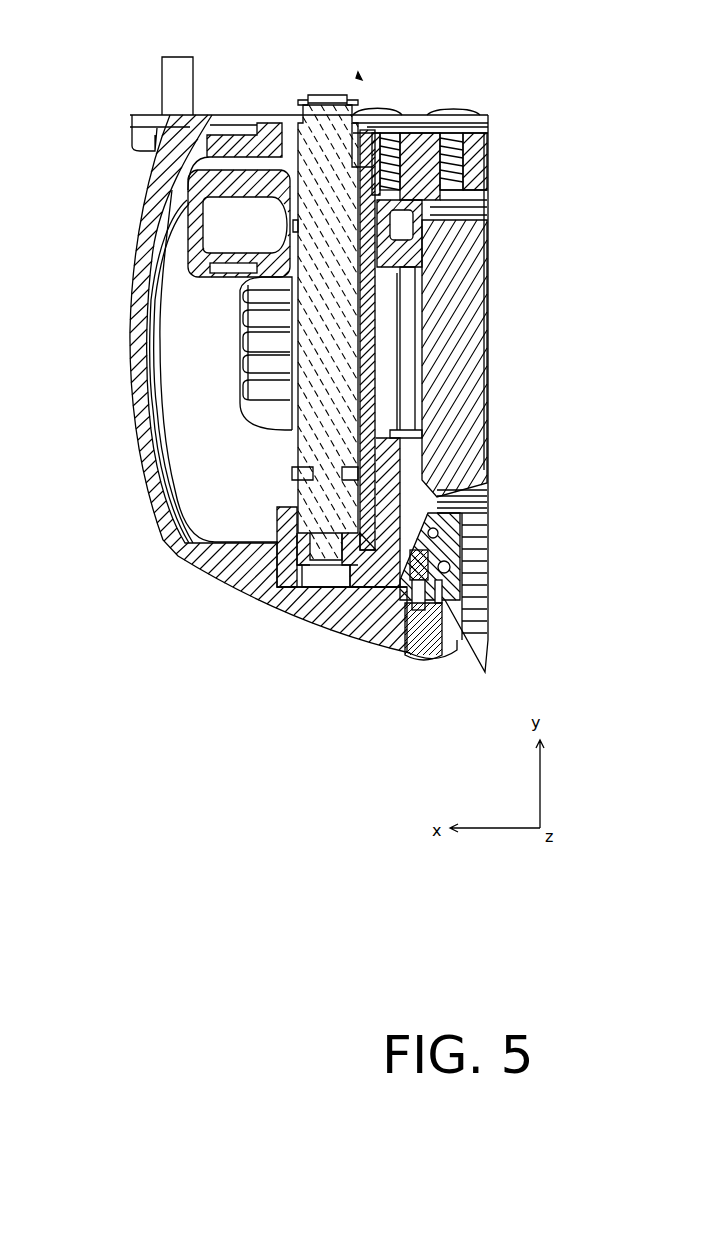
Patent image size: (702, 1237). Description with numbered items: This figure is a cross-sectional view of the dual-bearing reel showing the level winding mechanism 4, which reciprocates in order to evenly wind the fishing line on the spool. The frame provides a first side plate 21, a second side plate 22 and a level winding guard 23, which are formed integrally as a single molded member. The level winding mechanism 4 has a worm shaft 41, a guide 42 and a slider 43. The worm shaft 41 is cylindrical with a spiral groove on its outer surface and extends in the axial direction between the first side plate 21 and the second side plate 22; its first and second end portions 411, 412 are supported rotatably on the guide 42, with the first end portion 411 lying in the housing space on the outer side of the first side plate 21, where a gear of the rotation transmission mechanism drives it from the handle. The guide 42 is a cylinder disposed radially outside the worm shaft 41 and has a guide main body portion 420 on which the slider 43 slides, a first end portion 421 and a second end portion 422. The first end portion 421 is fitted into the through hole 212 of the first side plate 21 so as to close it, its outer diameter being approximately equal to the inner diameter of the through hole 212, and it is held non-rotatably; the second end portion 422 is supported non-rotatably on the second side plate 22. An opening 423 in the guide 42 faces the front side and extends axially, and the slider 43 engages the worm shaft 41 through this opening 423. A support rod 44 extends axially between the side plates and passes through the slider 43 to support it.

The level winding mechanism 4 is at (360, 74).
The first side plate 21 is at (425, 114).
The second side plate 22 is at (325, 620).
The level winding guard 23 is at (131, 362).
The worm shaft 41 is at (318, 284).
The guide 42 is at (280, 570).
The slider 43 is at (150, 200).
The support rod 44 is at (393, 442).
The through hole 212 is at (259, 115).
The first end portion 411 is at (330, 97).
The second end portion 412 is at (305, 608).
The guide main body portion 420 is at (373, 468).
The first end portion 421 is at (388, 114).
The second end portion 422 is at (262, 594).
The opening 423 is at (277, 484).